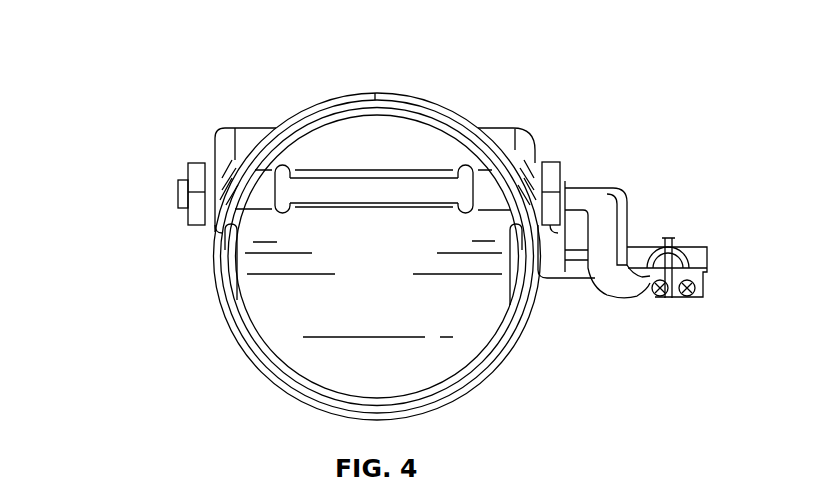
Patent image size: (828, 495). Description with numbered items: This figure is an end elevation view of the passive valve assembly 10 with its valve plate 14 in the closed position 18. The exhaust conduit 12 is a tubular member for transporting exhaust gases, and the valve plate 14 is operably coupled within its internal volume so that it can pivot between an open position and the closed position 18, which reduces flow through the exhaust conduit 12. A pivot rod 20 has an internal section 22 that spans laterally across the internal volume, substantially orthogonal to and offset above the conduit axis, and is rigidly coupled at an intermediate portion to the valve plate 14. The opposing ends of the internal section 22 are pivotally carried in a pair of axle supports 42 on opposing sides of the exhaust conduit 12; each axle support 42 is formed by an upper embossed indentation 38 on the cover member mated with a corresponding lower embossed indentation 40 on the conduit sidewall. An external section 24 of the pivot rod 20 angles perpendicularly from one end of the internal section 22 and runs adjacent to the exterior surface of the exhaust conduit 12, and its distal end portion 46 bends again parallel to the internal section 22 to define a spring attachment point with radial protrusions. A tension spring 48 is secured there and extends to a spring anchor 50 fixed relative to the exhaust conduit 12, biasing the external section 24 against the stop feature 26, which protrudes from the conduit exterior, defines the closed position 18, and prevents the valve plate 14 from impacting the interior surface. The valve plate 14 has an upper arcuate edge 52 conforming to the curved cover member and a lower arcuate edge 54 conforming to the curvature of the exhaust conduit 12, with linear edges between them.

The passive valve assembly 10 is at (122, 58).
The exhaust conduit 12 is at (212, 270).
The valve plate 14 is at (386, 296).
The closed position 18 is at (247, 390).
The pivot rod 20 is at (402, 182).
The internal section 22 is at (318, 165).
The external section 24 is at (590, 283).
The stop feature 26 is at (634, 213).
The upper embossed indentations 38 is at (213, 158).
The lower embossed indentations 40 is at (176, 205).
The axle supports 42 is at (182, 160).
The distal end portion 46 is at (646, 291).
The tension spring 48 is at (708, 262).
The spring anchor 50 is at (695, 250).
The upper arcuate edge 52 is at (395, 110).
The lower arcuate edge 54 is at (420, 397).